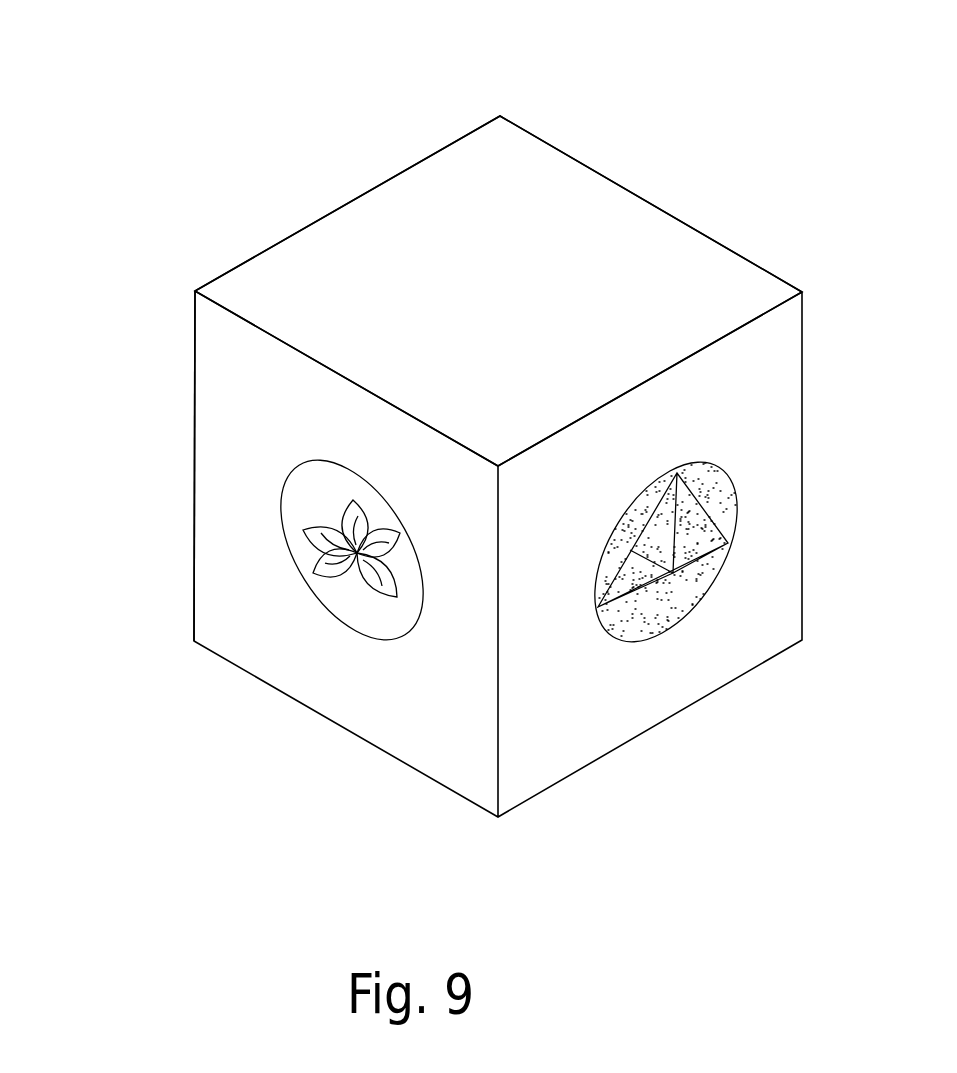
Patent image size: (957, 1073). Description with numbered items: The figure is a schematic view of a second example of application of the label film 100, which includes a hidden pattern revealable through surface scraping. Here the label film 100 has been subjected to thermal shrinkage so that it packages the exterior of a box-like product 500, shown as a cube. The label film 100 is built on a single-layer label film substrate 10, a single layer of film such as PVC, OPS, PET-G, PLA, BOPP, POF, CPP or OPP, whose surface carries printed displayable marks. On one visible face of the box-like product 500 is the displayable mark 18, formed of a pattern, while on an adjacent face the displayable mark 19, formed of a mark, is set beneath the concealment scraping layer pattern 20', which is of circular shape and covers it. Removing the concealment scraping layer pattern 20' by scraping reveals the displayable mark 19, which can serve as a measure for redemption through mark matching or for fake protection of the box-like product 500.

The single-layer label film substrate 10 is at (423, 732).
The displayable mark 18 is at (298, 548).
The displayable mark 19 is at (703, 522).
The concealment scraping layer pattern 20' is at (627, 681).
The label film 100 is at (242, 512).
The box-like product 500 is at (598, 212).